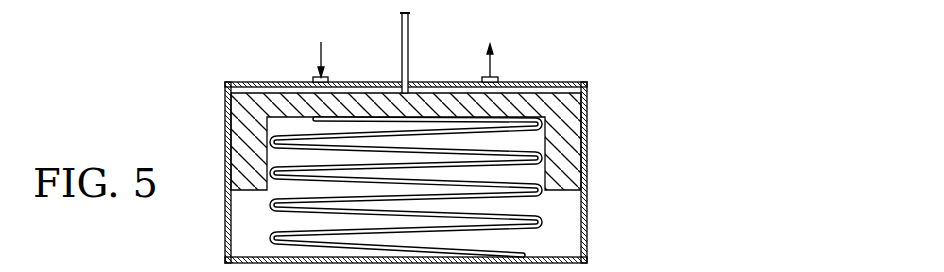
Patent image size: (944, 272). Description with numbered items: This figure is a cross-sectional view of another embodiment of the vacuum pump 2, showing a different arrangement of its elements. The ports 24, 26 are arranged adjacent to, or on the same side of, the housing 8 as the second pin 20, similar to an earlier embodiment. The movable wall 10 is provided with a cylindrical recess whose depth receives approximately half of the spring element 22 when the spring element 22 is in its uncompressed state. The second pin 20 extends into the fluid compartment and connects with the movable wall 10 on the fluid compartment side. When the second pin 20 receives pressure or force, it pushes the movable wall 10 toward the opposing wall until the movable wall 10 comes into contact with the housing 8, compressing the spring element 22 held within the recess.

The vacuum pump 2 is at (611, 66).
The housing 8 is at (587, 145).
The movable wall 10 is at (232, 119).
The second pin 20 is at (410, 91).
The spring element 22 is at (540, 220).
The port 24 is at (316, 77).
The port 26 is at (496, 77).